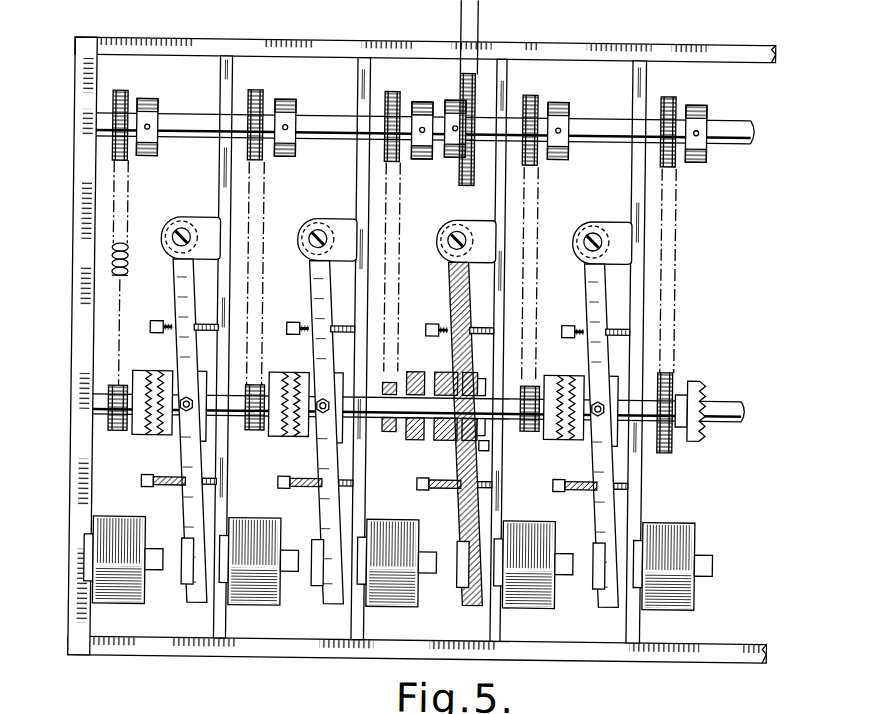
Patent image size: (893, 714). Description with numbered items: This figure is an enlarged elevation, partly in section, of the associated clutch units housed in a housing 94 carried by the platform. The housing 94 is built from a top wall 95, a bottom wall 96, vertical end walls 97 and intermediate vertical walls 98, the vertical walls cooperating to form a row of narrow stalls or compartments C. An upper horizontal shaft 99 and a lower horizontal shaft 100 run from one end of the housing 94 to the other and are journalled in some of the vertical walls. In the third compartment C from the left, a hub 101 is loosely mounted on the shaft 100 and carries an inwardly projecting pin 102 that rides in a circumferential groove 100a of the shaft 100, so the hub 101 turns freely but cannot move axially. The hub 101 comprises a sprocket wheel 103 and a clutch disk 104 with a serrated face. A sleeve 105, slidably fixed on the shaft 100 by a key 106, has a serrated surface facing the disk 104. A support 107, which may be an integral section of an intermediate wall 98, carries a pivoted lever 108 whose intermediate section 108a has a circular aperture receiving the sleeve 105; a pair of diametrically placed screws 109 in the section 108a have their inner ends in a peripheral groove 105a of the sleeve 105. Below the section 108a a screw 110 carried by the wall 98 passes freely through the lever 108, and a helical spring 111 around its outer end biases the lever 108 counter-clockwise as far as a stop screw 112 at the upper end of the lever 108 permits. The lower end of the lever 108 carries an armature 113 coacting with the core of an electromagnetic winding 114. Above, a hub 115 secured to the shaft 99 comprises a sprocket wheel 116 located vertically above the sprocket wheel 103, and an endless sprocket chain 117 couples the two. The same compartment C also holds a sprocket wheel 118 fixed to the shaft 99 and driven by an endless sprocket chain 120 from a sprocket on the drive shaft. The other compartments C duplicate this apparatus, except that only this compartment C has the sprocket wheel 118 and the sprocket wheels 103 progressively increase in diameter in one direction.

The housing 94 is at (104, 42).
The top wall 95 is at (149, 45).
The bottom wall 96 is at (165, 659).
The vertical end walls 97 is at (75, 445).
The intermediate vertical walls 98 is at (231, 78).
The upper horizontal shaft 99 is at (738, 118).
The lower horizontal shaft 100 is at (735, 405).
The groove 100a is at (398, 442).
The hub 101 is at (118, 435).
The pin 102 is at (140, 374).
The sprocket wheel 103 is at (110, 392).
The clutch disk 104 is at (708, 378).
The sleeve 105 is at (310, 388).
The groove 105a is at (490, 445).
The key 106 is at (480, 395).
The support 107 is at (198, 221).
The lever 108 is at (178, 290).
The lever section 108a is at (192, 452).
The screws 109 is at (160, 438).
The screw 110 is at (147, 485).
The helical spring 111 is at (170, 490).
The stop screw 112 is at (293, 325).
The armature 113 is at (188, 575).
The electromagnetic winding 114 is at (250, 605).
The hub 115 is at (155, 108).
The sprocket wheel 116 is at (118, 92).
The endless sprocket chain 117 is at (130, 248).
The sprocket wheel 118 is at (458, 85).
The endless sprocket chain 120 is at (478, 30).
The compartments C is at (185, 75).